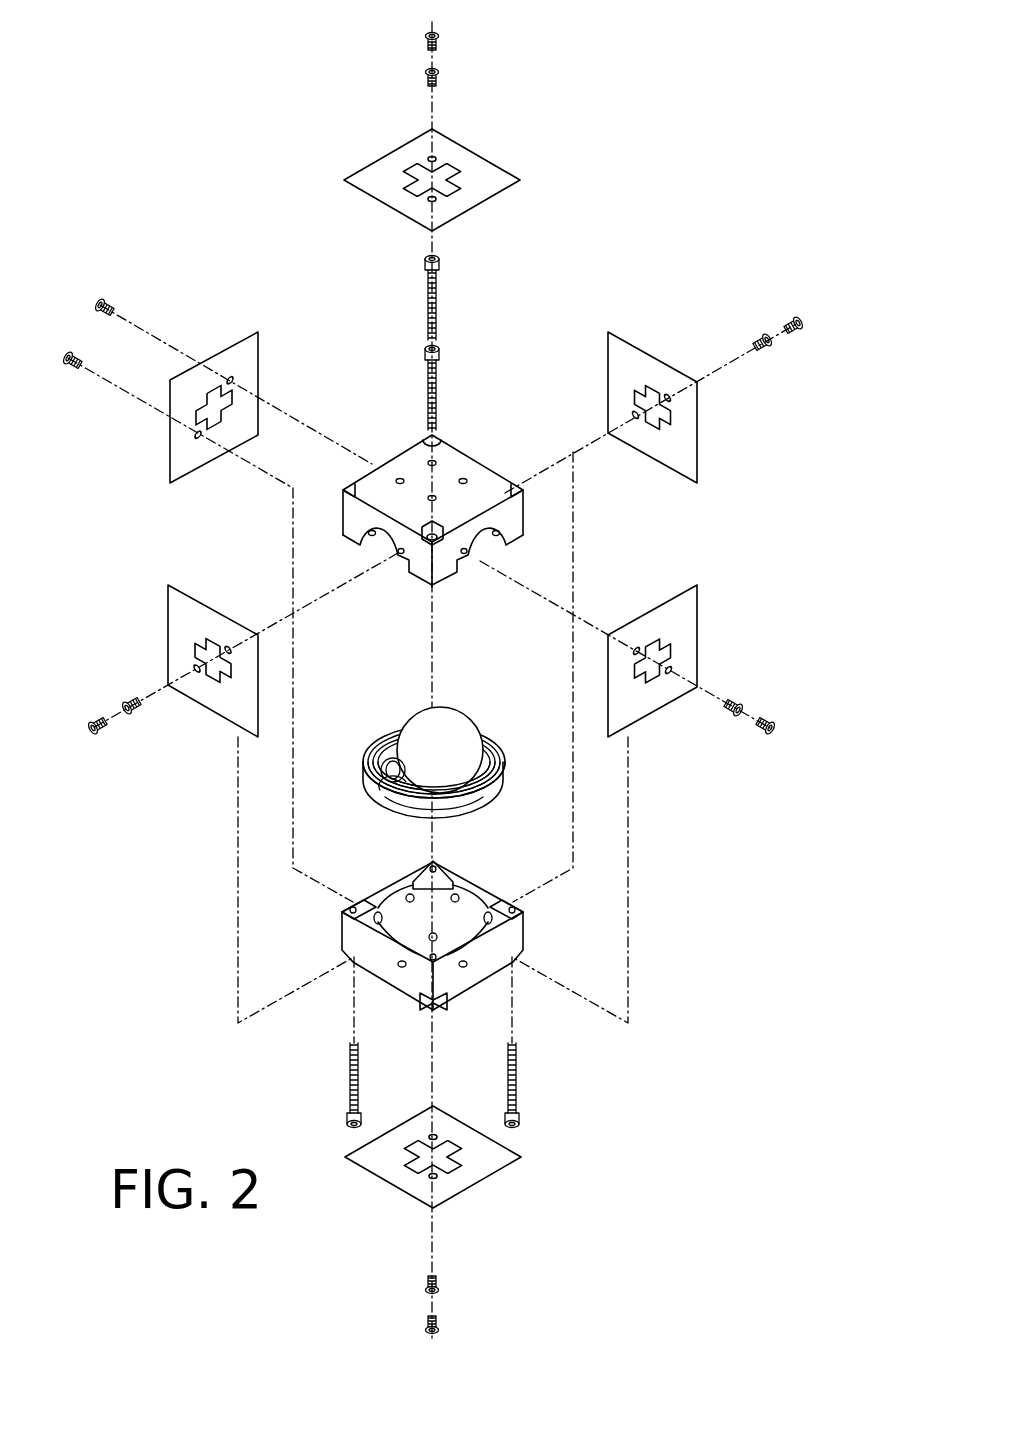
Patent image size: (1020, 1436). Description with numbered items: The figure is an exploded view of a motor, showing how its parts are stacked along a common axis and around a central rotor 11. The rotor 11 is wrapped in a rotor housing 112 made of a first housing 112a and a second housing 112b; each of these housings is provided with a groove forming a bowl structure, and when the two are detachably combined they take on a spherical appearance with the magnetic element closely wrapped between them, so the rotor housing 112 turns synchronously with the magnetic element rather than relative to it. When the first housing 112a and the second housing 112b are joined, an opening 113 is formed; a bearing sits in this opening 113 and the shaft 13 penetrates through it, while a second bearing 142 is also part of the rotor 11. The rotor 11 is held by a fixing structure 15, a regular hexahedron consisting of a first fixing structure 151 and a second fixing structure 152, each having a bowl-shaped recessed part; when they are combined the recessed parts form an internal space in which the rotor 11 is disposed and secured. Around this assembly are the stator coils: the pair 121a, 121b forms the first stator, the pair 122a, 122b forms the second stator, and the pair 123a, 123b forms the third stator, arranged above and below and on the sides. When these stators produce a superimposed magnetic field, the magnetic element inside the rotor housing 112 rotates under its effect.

The rotor 11 is at (407, 724).
The rotor housing 112 is at (401, 699).
The first housing 112a is at (397, 740).
The second housing 112b is at (431, 727).
The opening 113 is at (381, 766).
The shaft 13 is at (383, 790).
The second bearing 142 is at (488, 798).
The fixing structure 15 is at (586, 722).
The first fixing structure 151 is at (477, 530).
The second fixing structure 152 is at (515, 935).
The stator coil 121a is at (650, 700).
The stator coil 121b is at (177, 453).
The stator coil 122a is at (702, 463).
The stator coil 122b is at (212, 700).
The stator coil 123a is at (487, 175).
The stator coil 123b is at (477, 1178).